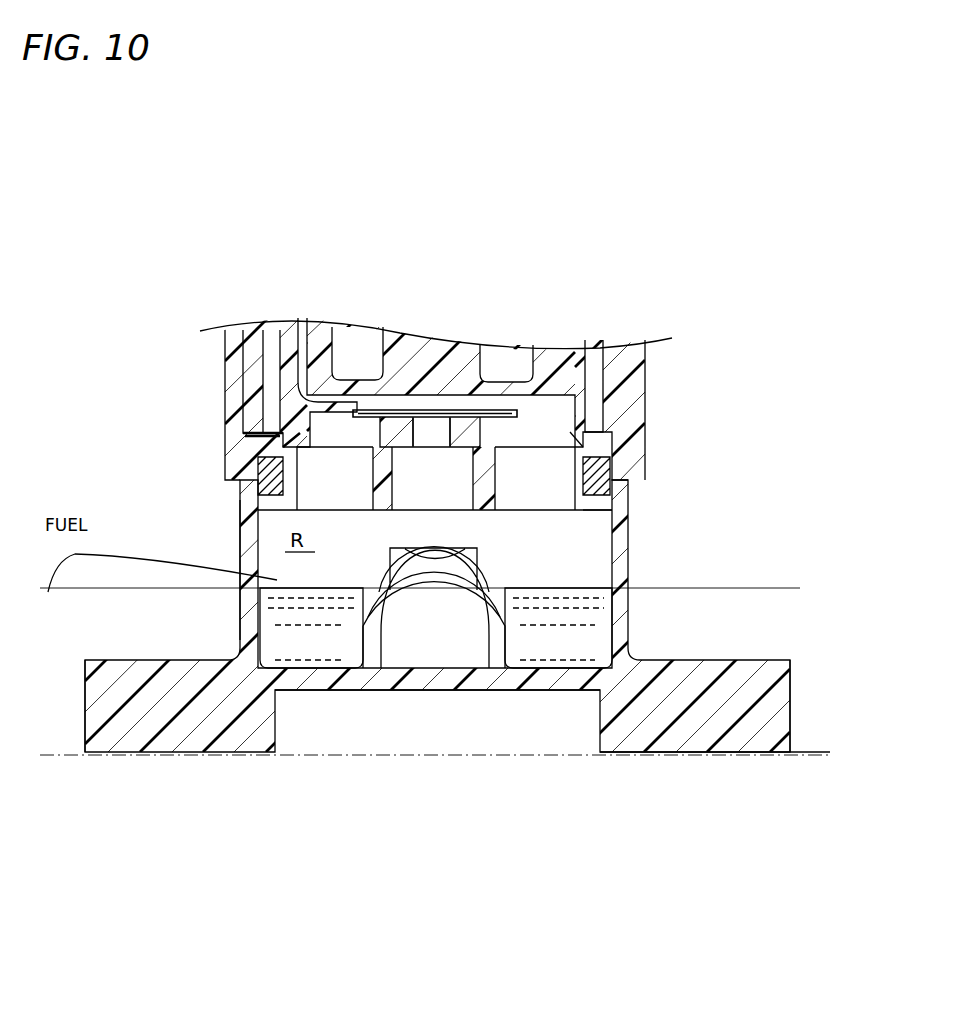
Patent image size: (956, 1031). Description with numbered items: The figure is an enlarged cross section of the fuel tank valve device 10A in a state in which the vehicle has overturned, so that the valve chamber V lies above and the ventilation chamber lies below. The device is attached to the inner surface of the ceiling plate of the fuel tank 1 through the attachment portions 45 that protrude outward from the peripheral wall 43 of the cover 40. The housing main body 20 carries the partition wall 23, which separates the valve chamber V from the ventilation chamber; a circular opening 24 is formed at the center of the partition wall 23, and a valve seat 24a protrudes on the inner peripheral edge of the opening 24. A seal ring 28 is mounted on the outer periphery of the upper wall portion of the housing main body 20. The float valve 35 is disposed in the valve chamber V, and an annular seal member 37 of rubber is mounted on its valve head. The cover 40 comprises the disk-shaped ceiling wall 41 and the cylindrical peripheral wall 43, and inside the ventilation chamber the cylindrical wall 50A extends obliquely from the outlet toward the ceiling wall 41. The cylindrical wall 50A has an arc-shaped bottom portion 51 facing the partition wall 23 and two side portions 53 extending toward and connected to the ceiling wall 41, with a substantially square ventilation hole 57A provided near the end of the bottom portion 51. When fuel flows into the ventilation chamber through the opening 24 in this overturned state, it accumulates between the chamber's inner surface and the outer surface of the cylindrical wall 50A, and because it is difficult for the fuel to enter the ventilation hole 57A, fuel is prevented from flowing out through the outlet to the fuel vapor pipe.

The housing main body 20 is at (658, 361).
The float valve 35 is at (420, 337).
The partition wall 23 is at (545, 437).
The valve chamber V is at (557, 409).
The annular seal member 37 is at (353, 412).
The valve seat 24a is at (243, 433).
The opening 24 is at (250, 480).
The seal ring 28 is at (612, 470).
The cover 40 is at (800, 665).
The attachment portions 45 is at (97, 720).
The ceiling wall 41 is at (317, 677).
The peripheral wall 43 is at (240, 546).
The bottom portion 51 is at (612, 522).
The cylindrical wall 50A is at (514, 573).
The ventilation hole 57A is at (482, 544).
The side portions 53 is at (363, 643).
The fuel tank valve device 10A is at (646, 770).
The fuel tank 1 is at (805, 755).